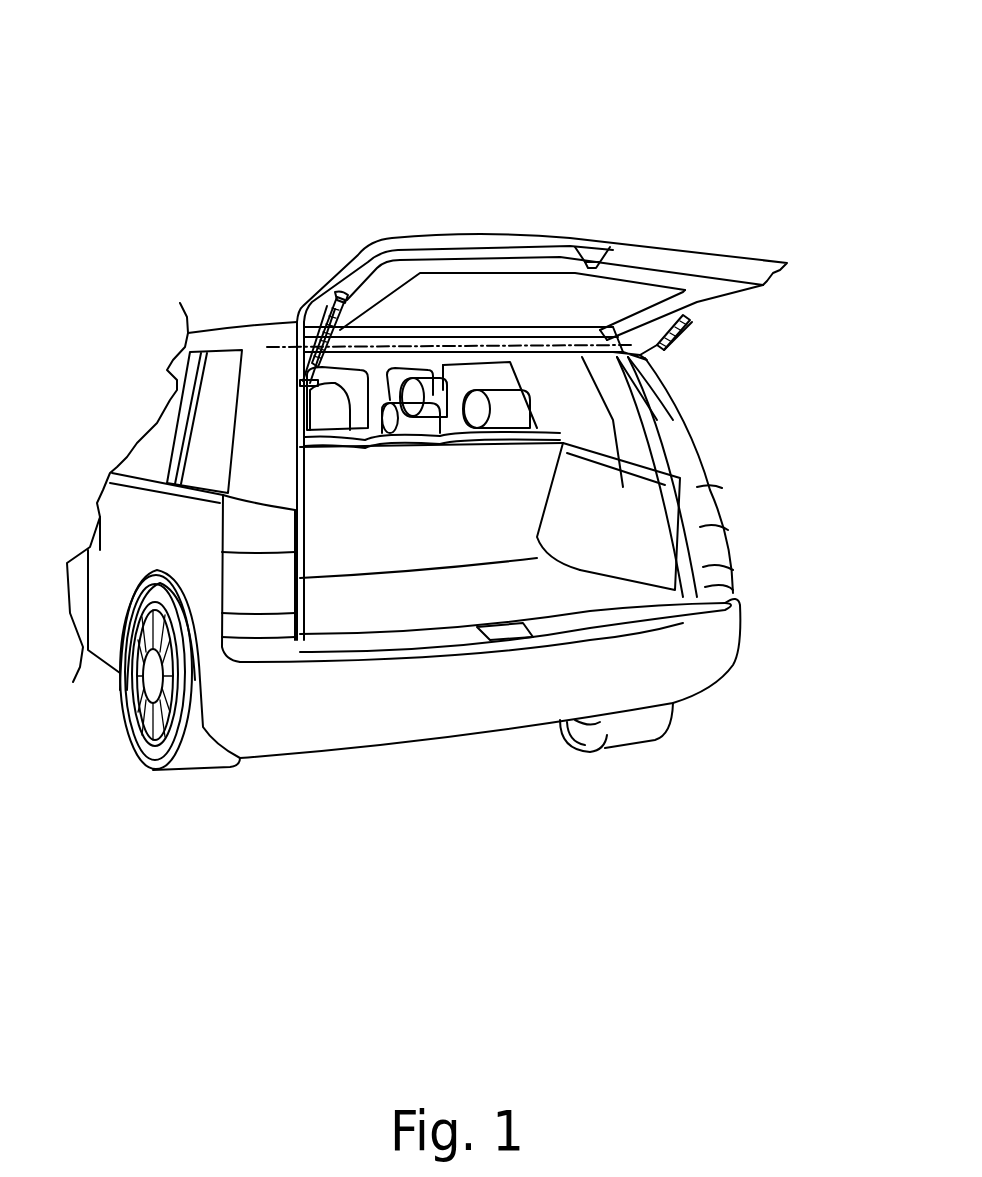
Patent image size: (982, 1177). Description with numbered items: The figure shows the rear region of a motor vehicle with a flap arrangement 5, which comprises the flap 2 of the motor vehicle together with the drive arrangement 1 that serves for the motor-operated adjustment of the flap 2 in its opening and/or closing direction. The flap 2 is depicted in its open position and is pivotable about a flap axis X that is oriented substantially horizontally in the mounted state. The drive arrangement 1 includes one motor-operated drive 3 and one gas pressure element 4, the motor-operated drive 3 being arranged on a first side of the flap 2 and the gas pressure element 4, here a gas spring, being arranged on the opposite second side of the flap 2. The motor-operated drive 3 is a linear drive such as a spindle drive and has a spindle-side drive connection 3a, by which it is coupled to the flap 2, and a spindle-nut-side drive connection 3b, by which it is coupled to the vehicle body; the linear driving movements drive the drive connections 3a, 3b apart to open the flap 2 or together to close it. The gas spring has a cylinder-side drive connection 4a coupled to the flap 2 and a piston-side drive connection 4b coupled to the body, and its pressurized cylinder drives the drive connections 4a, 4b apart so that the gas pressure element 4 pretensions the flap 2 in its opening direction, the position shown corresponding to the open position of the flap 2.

The drive arrangement 1 is at (640, 342).
The flap 2 is at (650, 240).
The motor-operated drive 3 is at (303, 337).
The spindle-side drive connection 3a is at (336, 292).
The spindle-nut-side drive connection 3b is at (300, 383).
The gas pressure element 4 is at (675, 338).
The cylinder-side drive connection 4a is at (697, 304).
The piston-side drive connection 4b is at (657, 390).
The flap arrangement 5 is at (760, 194).
The flap axis X is at (352, 347).